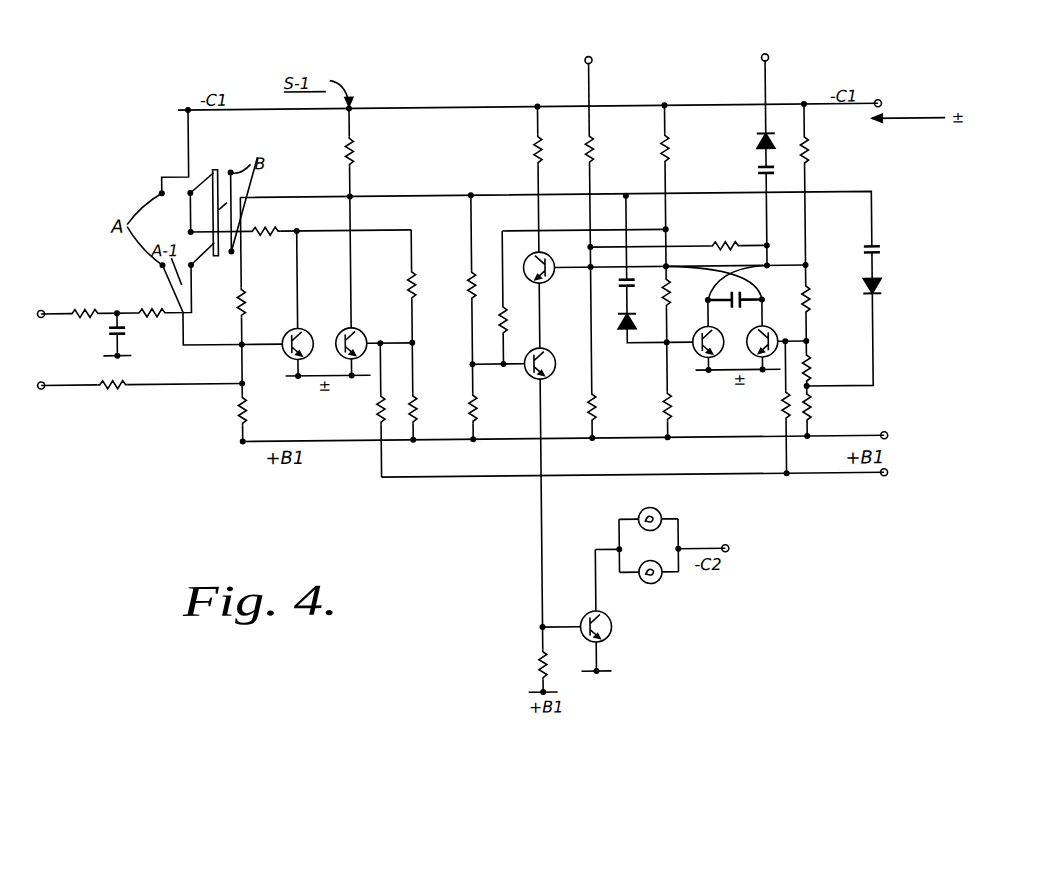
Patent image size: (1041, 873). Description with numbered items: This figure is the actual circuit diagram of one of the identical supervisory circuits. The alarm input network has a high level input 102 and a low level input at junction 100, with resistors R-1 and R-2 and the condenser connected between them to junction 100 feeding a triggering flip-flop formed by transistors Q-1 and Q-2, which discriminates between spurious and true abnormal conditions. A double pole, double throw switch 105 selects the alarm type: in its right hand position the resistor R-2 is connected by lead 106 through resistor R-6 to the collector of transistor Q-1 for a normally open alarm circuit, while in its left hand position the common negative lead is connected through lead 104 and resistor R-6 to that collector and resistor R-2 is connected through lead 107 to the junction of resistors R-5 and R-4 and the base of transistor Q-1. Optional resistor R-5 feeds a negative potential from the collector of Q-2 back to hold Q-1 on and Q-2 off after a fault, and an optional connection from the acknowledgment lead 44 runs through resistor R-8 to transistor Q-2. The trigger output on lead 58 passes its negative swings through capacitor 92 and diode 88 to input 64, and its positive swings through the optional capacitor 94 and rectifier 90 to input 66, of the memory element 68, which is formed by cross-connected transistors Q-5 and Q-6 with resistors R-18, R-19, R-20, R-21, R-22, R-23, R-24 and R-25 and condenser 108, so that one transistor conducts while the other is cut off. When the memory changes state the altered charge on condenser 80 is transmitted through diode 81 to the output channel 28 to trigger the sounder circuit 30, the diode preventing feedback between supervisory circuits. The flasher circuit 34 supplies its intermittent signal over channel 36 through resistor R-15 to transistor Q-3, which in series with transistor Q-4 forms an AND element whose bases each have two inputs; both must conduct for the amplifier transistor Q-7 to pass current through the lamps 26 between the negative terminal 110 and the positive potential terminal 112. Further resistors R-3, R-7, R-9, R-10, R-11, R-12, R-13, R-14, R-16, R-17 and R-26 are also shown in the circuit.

The high level input 102 is at (40, 308).
The low level input junction 100 is at (115, 307).
The lead 104 is at (188, 165).
The double pole, double throw switch 105 is at (199, 185).
The lead 106 is at (188, 233).
The lead 107 is at (195, 346).
The condenser 108 is at (748, 322).
The negative terminal 110 is at (722, 549).
The positive potential terminal 112 is at (599, 677).
The lights 26 is at (648, 565).
The output channel 28 is at (775, 103).
The sounder circuit 30 is at (756, 38).
The flasher circuit 34 is at (577, 40).
The channel 36 is at (598, 103).
The acknowledgment lead 44 is at (862, 484).
The lead 58 is at (870, 200).
The memory input 64 is at (655, 349).
The memory input 66 is at (872, 380).
The MEMORY element 68 is at (733, 350).
The condenser 80 is at (755, 180).
The diode 81 is at (757, 146).
The diode 88 is at (624, 338).
The diode 90 is at (881, 300).
The capacitor 92 is at (630, 290).
The capacitor 94 is at (880, 258).
The resistor R-1 is at (84, 302).
The resistor R-2 is at (133, 301).
The resistor R-3 is at (128, 388).
The resistor R-4 is at (232, 410).
The resistor R-5 is at (243, 308).
The resistor R-6 is at (268, 230).
The resistor R-7 is at (356, 153).
The resistor R-8 is at (376, 407).
The resistor R-9 is at (414, 290).
The resistor R-10 is at (414, 404).
The resistor R-11 is at (452, 408).
The resistor R-12 is at (466, 300).
The resistor R-13 is at (533, 142).
The resistor R-14 is at (497, 302).
The resistor R-15 is at (597, 168).
The resistor R-16 is at (594, 415).
The resistor R-17 is at (532, 664).
The resistor R-18 is at (668, 175).
The resistor R-19 is at (718, 248).
The resistor R-20 is at (670, 300).
The resistor R-21 is at (645, 414).
The resistor R-22 is at (810, 160).
The resistor R-23 is at (812, 300).
The resistor R-24 is at (810, 372).
The resistor R-25 is at (812, 424).
The resistor R-26 is at (781, 410).
The transistor Q-1 is at (312, 328).
The transistor Q-2 is at (368, 326).
The transistor Q-3 is at (566, 254).
The transistor Q-4 is at (568, 355).
The transistor Q-5 is at (700, 327).
The transistor Q-6 is at (780, 328).
The amplifier transistor Q-7 is at (608, 630).